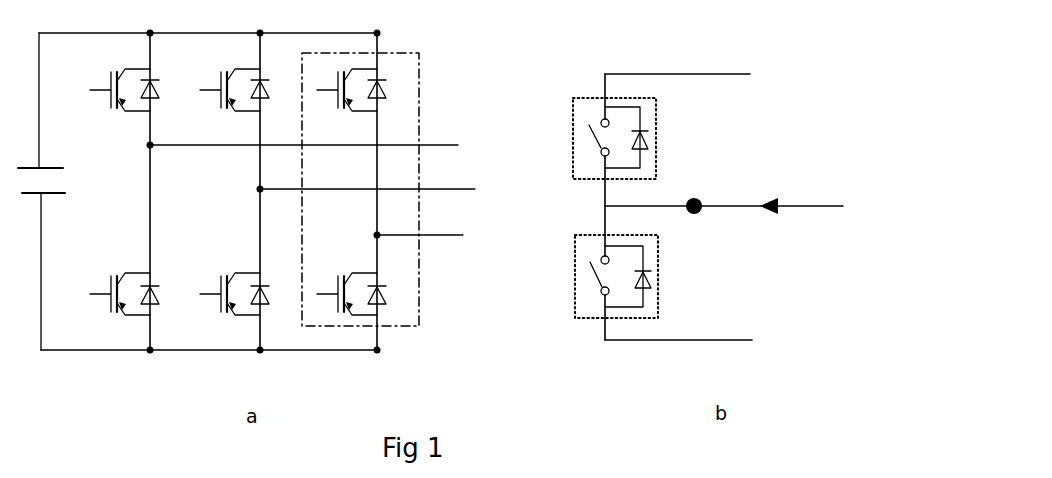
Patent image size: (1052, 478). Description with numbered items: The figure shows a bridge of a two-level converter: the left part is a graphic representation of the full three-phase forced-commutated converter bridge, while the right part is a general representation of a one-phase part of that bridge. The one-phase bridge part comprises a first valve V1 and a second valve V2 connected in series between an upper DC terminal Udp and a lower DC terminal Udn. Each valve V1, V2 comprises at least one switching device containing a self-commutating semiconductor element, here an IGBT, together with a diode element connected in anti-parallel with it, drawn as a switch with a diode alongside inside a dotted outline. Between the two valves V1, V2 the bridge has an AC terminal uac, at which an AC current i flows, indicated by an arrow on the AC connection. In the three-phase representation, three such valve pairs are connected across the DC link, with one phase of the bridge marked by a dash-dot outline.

The upper switching valve (switch with antiparallel diode) V1 is at (601, 138).
The lower switching valve (switch with antiparallel diode) V2 is at (602, 276).
The positive DC link voltage terminal Udp is at (699, 73).
The negative DC link voltage terminal Udn is at (700, 339).
The AC output voltage node uac is at (724, 194).
The output current i is at (772, 191).